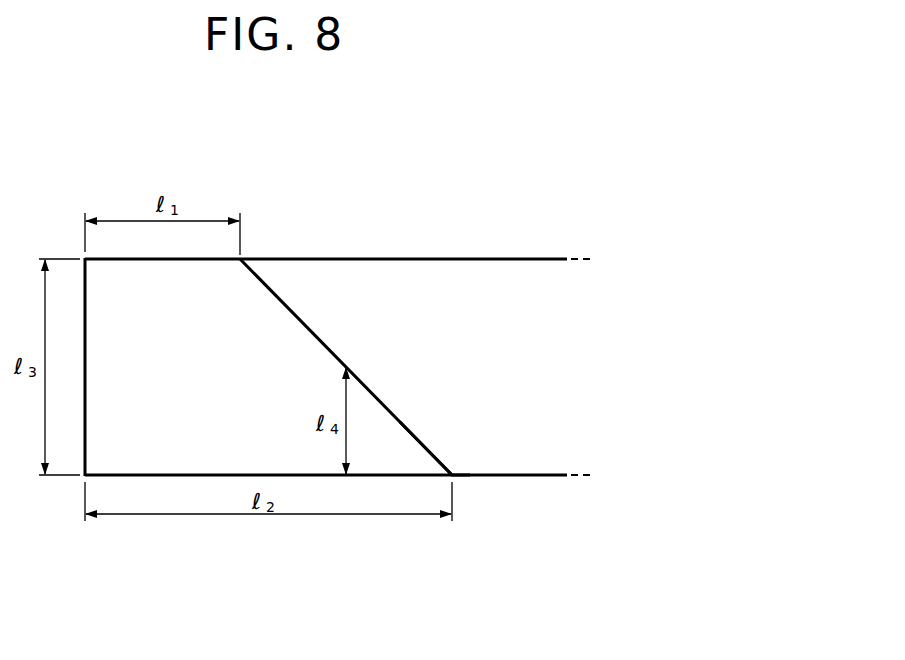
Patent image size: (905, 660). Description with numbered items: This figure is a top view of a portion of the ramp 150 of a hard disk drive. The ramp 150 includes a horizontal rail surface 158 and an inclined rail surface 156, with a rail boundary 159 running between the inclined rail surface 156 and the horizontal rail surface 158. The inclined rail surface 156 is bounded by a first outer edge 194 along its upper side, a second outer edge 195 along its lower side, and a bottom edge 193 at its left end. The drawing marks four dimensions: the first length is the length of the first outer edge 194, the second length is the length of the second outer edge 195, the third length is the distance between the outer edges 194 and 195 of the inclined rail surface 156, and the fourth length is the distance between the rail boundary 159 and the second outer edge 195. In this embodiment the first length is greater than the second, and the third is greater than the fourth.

The ramp 150 is at (295, 335).
The inclined rail surface 156 is at (225, 392).
The horizontal rail surface 158 is at (462, 277).
The rail boundary 159 is at (282, 288).
The bottom edge 193 is at (83, 440).
The first outer edge 194 is at (108, 258).
The second outer edge 195 is at (418, 478).